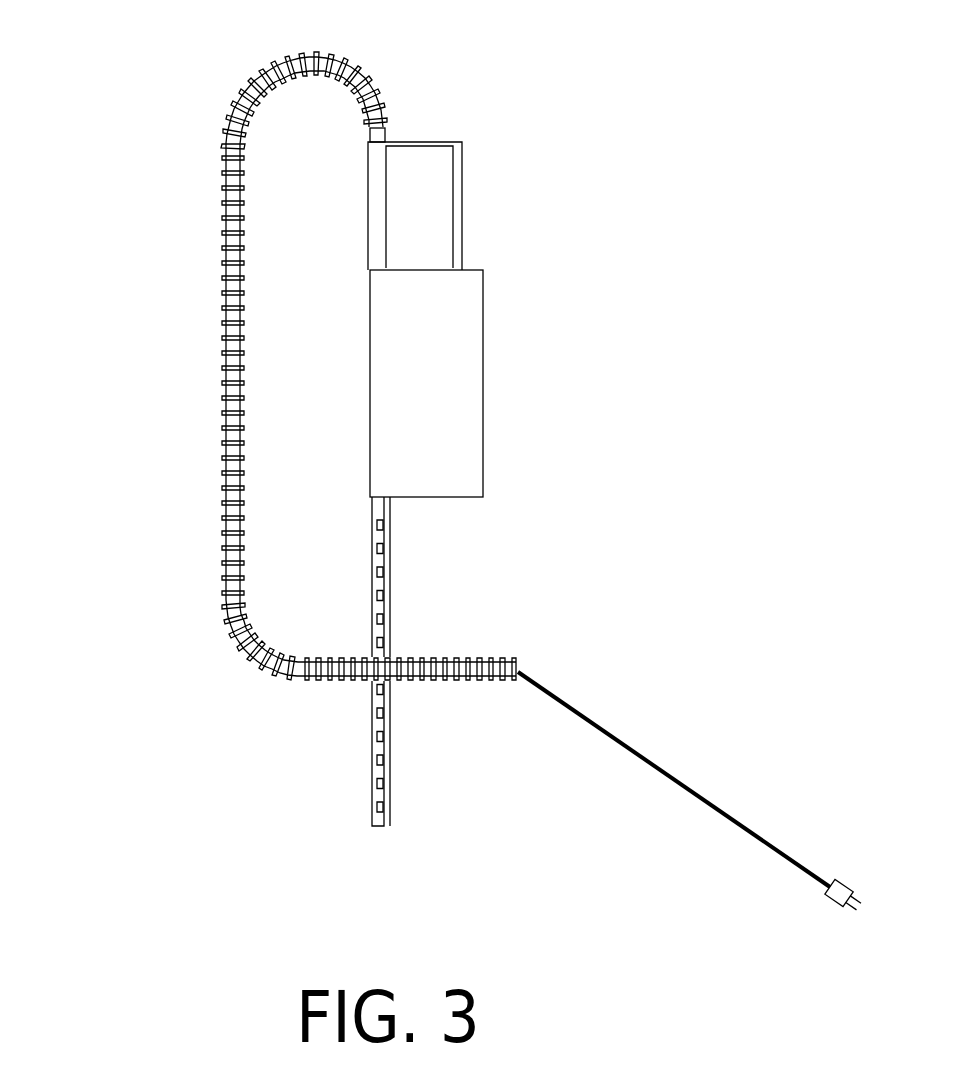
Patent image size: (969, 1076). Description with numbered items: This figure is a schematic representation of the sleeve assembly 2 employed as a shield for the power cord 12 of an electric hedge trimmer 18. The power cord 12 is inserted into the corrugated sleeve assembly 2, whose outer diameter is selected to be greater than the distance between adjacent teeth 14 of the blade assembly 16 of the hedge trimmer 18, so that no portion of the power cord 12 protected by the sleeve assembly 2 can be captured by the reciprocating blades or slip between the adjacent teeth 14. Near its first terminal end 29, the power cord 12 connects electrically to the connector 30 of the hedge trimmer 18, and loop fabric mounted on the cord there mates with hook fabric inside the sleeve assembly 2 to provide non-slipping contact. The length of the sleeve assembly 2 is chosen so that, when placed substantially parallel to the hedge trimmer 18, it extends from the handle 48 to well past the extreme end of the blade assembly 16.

The sleeve assembly 2 is at (265, 342).
The first terminal end 29 is at (365, 128).
The connector 30 is at (392, 137).
The handle 48 is at (493, 145).
The electric hedge trimmer 18 is at (486, 373).
The blade assembly 16 is at (214, 679).
The teeth 14 is at (368, 800).
The power cord 12 is at (645, 742).